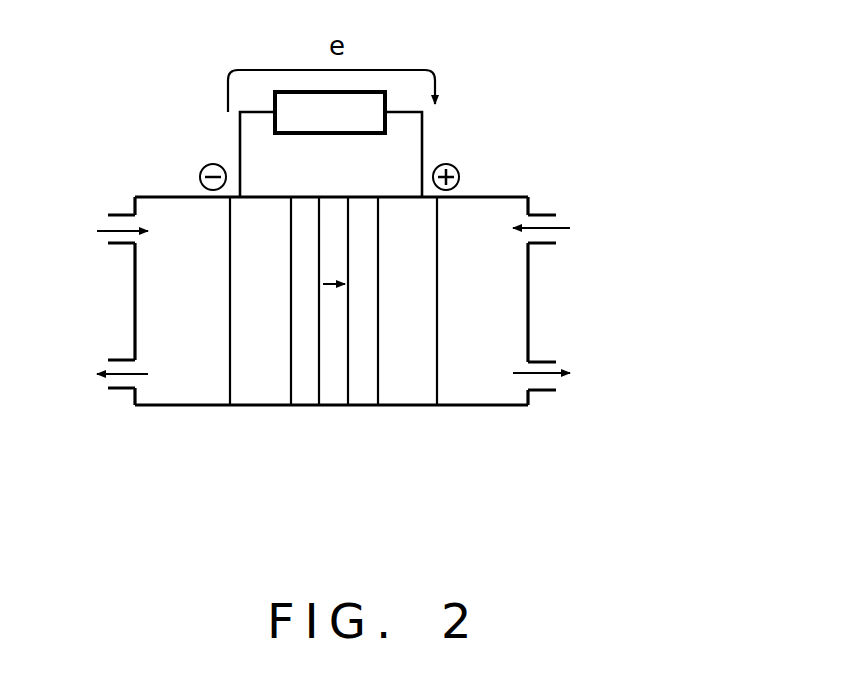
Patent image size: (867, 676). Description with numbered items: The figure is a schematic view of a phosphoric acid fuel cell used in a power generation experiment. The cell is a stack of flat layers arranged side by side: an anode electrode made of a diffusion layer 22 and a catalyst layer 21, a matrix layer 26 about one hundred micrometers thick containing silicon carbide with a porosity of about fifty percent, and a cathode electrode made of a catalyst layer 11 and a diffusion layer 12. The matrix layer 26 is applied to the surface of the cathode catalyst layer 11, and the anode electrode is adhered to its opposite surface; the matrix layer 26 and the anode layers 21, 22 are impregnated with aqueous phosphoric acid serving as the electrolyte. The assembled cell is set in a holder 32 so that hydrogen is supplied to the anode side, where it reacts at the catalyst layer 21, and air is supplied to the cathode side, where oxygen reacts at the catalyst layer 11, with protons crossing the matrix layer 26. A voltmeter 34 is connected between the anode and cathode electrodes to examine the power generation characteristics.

The holder 32 is at (495, 196).
The voltmeter 34 is at (333, 133).
The diffusion layer 22 is at (253, 392).
The catalyst layer 21 is at (303, 392).
The matrix layer 26 is at (335, 393).
The catalyst layer 11 is at (363, 392).
The diffusion layer 12 is at (412, 392).